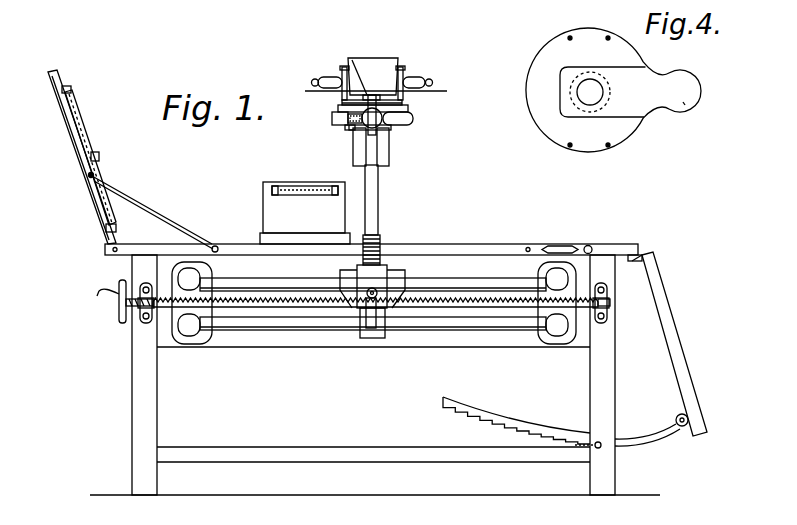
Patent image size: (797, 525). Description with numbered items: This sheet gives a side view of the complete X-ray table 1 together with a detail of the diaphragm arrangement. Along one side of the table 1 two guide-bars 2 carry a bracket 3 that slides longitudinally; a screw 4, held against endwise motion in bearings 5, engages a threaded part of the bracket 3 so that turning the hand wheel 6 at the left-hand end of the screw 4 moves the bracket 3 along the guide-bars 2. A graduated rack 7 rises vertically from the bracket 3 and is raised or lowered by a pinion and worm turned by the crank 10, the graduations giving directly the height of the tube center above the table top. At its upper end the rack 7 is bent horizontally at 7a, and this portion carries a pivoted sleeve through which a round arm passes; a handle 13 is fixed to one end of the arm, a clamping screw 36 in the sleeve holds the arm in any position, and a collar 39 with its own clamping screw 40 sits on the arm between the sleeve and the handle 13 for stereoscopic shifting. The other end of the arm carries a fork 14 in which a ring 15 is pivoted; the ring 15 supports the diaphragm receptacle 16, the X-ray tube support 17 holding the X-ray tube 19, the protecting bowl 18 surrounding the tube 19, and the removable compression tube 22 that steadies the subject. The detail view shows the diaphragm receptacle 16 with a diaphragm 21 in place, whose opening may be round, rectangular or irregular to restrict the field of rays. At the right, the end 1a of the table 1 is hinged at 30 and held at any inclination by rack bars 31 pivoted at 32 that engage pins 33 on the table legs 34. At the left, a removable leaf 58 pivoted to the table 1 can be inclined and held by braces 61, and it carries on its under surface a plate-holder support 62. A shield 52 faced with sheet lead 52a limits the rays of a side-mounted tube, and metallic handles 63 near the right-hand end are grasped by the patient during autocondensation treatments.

In FIG. 1, the table 1 is at (505, 247).
In FIG. 1, the right-hand end of the table 1a is at (686, 331).
In FIG. 1, the guide-bars 2 is at (445, 280).
In FIG. 1, the bracket 3 is at (390, 275).
In FIG. 1, the screw 4 is at (492, 307).
In FIG. 1, the bearings 5 is at (140, 302).
In FIG. 1, the hand wheel 6 is at (97, 293).
In FIG. 1, the rack 7 is at (379, 193).
In FIG. 1, the horizontal portion of the rack 7a is at (390, 130).
In FIG. 1, the crank 10 is at (372, 305).
In FIG. 1, the handle 13 is at (358, 127).
In FIG. 1, the fork 14 is at (408, 117).
In FIG. 1, the ring 15 is at (410, 120).
In FIG. 1, the diaphragm receptacle 16 is at (405, 103).
In FIG. 4, the diaphragm receptacle 16 is at (531, 92).
In FIG. 1, the X-ray tube support 17 is at (440, 92).
In FIG. 1, the protecting bowl 18 is at (384, 64).
In FIG. 1, the X-ray tube 19 is at (420, 81).
In FIG. 1, the diaphragm 21 is at (342, 101).
In FIG. 4, the diaphragm 21 is at (683, 102).
In FIG. 1, the compression tube 22 is at (392, 160).
In FIG. 1, the hinge 30 is at (638, 262).
In FIG. 1, the rack bars 31 is at (626, 428).
In FIG. 1, the pivot 32 is at (681, 428).
In FIG. 1, the pins 33 is at (601, 448).
In FIG. 1, the table legs 34 is at (593, 383).
In FIG. 1, the clamping screw 36 is at (352, 60).
In FIG. 1, the collar 39 is at (385, 124).
In FIG. 1, the clamping screw 40 is at (338, 119).
In FIG. 1, the shield 52 is at (290, 195).
In FIG. 1, the sheet lead facing 52a is at (292, 186).
In FIG. 1, the removable leaf 58 is at (81, 152).
In FIG. 1, the braces 61 is at (150, 207).
In FIG. 1, the plate-holder support 62 is at (77, 114).
In FIG. 1, the metallic handles 63 is at (560, 245).